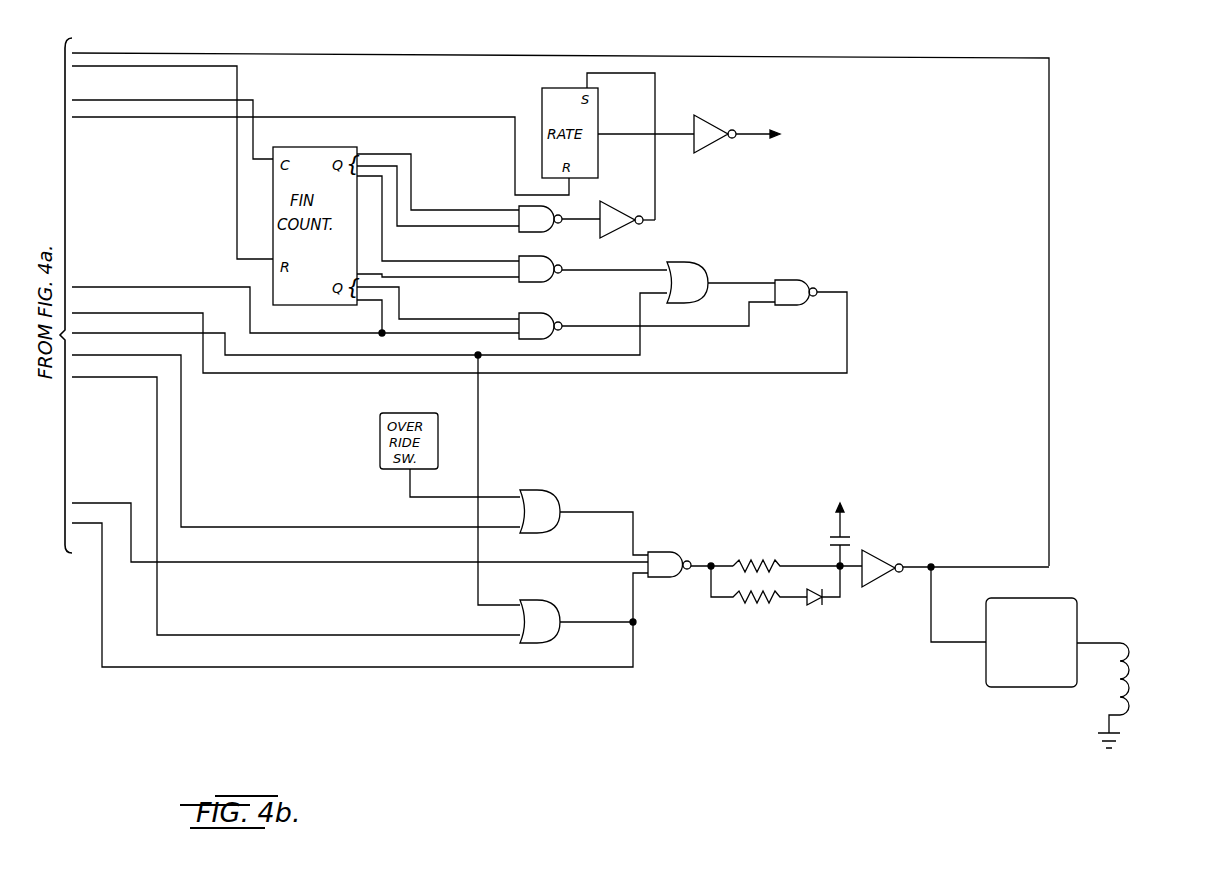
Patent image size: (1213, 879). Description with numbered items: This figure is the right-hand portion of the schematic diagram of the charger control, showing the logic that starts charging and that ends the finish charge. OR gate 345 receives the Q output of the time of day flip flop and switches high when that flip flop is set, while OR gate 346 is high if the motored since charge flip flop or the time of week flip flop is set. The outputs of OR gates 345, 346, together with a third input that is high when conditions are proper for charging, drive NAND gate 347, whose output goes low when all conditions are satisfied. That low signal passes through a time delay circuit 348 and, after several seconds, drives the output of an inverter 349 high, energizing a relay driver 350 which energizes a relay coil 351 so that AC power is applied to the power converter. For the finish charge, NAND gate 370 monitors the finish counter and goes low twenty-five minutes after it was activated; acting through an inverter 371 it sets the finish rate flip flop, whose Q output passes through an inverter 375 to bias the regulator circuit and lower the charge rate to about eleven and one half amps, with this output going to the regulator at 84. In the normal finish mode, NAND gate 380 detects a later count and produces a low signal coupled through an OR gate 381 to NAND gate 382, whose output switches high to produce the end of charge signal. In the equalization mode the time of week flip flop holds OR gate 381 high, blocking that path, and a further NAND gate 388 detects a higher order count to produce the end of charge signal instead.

The NAND gate 370 is at (534, 233).
The inverter 371 is at (621, 197).
The inverter 375 is at (712, 112).
The output line to register 84 is at (750, 133).
The NAND gate 380 is at (533, 283).
The NAND gate 388 is at (549, 316).
The OR gate 381 is at (706, 252).
The NAND gate 382 is at (799, 266).
The OR gate 345 is at (561, 478).
The OR gate 346 is at (569, 592).
The NAND gate 347 is at (682, 546).
The time delay circuit 348 is at (728, 641).
The inverter 349 is at (882, 551).
The relay driver 350 is at (986, 670).
The relay coil 351 is at (1130, 672).